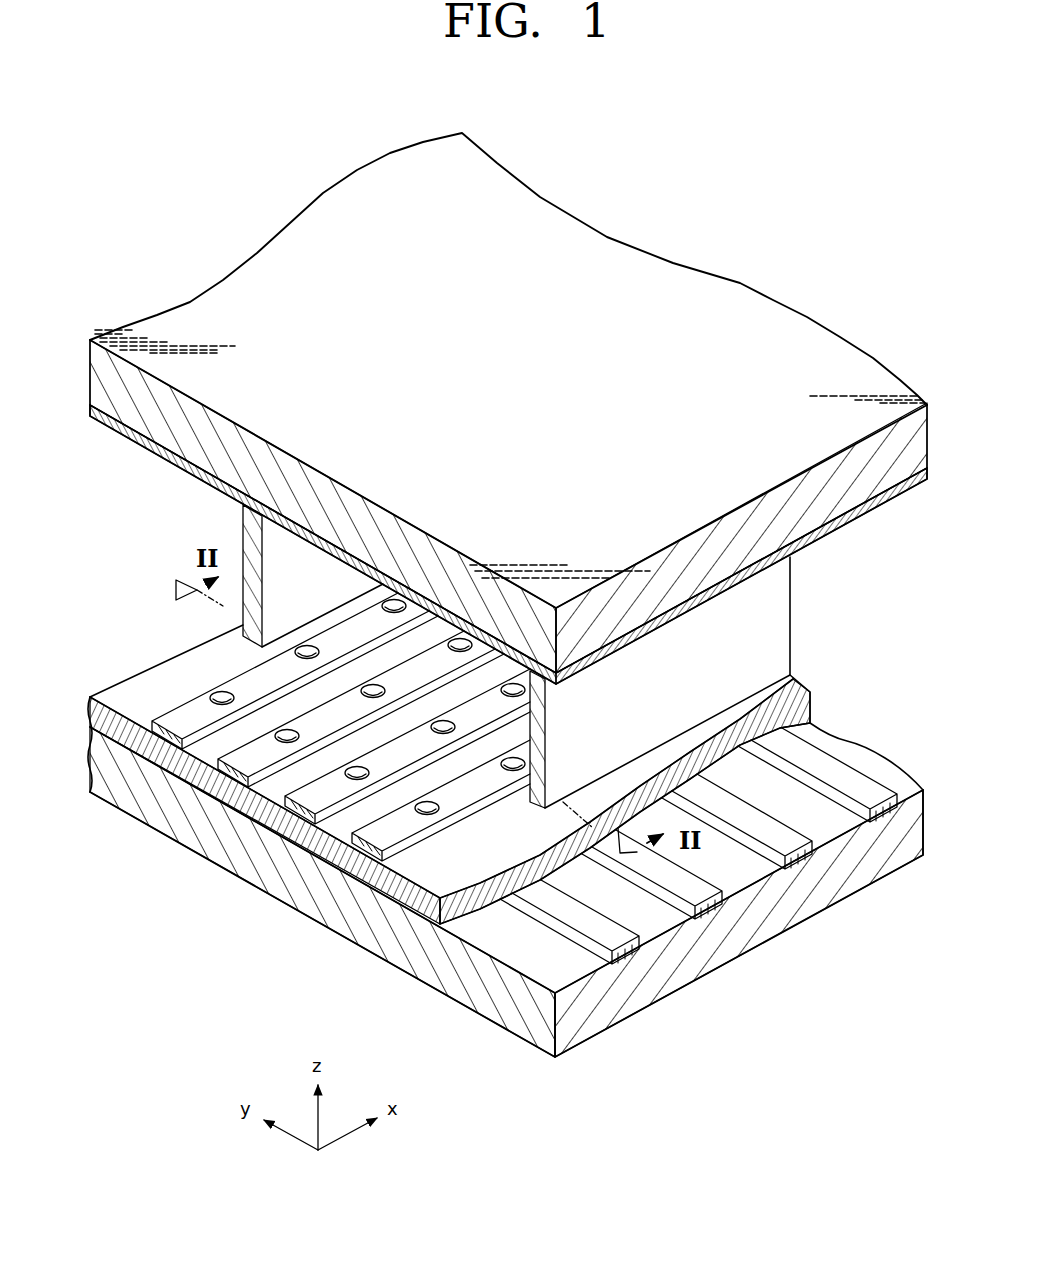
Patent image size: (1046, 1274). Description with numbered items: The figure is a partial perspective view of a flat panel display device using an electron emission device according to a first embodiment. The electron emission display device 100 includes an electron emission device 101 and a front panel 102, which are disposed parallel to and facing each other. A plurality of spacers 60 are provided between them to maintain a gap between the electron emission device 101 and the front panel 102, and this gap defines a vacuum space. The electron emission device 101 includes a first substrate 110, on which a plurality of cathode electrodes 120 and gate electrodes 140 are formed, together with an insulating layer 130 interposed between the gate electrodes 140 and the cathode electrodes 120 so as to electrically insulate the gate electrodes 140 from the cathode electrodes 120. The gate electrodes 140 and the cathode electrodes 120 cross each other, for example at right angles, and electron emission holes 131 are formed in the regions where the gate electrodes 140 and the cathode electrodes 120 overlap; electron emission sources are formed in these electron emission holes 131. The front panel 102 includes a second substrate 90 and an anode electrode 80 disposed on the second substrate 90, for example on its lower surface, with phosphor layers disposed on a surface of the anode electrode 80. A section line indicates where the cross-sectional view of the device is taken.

The spacers 60 is at (790, 638).
The anode electrode 80 is at (837, 530).
The second substrate 90 is at (875, 480).
The electron emission display device 100 is at (108, 522).
The electron emission device 101 is at (175, 651).
The front panel 102 is at (158, 466).
The first substrate 110 is at (452, 963).
The cathode electrodes 120 is at (634, 951).
The insulating layer 130 is at (392, 900).
The electron emission holes 131 is at (343, 767).
The gate electrodes 140 is at (358, 843).